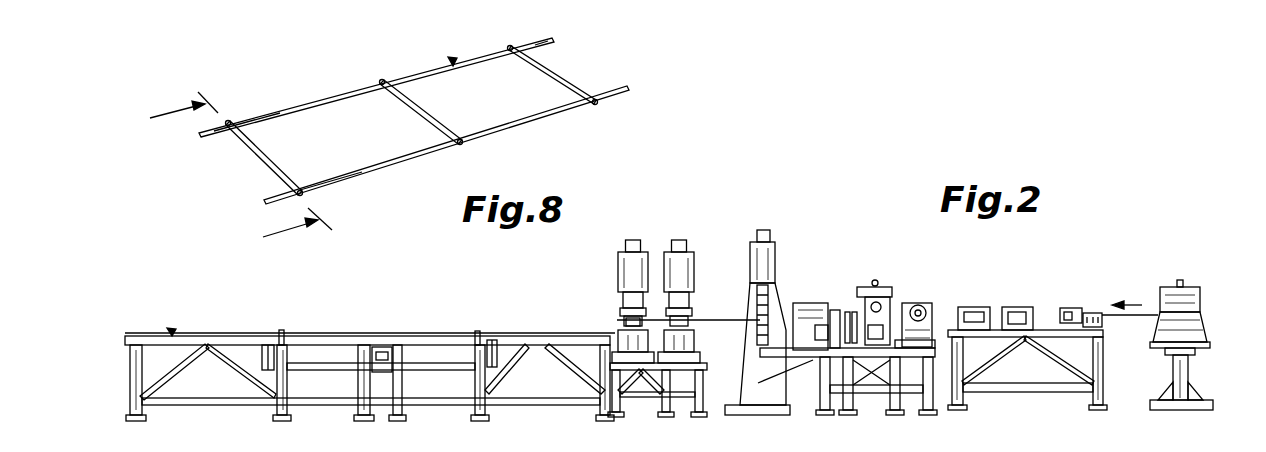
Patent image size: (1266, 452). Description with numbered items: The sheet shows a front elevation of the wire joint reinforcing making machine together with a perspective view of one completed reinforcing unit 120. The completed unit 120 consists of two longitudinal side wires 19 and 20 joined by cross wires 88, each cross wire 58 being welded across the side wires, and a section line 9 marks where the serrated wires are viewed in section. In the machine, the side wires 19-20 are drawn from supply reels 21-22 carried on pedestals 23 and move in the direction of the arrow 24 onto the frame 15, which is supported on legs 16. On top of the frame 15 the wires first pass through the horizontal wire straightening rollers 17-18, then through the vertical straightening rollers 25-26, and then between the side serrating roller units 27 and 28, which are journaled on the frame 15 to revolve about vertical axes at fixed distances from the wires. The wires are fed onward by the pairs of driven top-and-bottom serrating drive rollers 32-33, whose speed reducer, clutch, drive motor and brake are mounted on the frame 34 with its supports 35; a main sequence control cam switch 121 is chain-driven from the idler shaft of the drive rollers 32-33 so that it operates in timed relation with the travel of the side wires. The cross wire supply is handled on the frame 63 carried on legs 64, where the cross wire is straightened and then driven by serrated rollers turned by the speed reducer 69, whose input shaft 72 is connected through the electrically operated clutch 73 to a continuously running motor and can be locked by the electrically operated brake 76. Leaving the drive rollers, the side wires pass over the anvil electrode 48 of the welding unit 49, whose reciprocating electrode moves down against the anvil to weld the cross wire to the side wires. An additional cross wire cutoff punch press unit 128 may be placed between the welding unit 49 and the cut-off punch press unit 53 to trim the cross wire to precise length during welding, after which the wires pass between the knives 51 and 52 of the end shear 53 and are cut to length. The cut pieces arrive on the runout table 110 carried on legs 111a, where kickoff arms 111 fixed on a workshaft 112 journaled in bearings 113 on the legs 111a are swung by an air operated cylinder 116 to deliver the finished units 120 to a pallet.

In FIG. 8, the section line 9- 9 is at (227, 174).
In FIG. 8, the side wire 19 is at (321, 101).
In FIG. 8, the side wire 20 is at (410, 157).
In FIG. 8, the cross wire 88 is at (400, 90).
In FIG. 8, the cross wire 58 is at (558, 76).
In FIG. 8, the reinforcing unit 120 is at (453, 63).
In FIG. 2, the reinforcing unit 120 is at (170, 333).
In FIG. 2, the runout table 110 is at (320, 335).
In FIG. 2, the kickoff arms 111 is at (265, 360).
In FIG. 2, the legs 111a is at (290, 415).
In FIG. 2, the workshaft 112 is at (305, 370).
In FIG. 2, the bearings 113 is at (282, 330).
In FIG. 2, the air operated cylinder 116 is at (383, 345).
In FIG. 2, the knife 52 is at (620, 327).
In FIG. 2, the cut-off punch press unit 53 is at (625, 270).
In FIG. 2, the cross wire cutoff punch press unit 128 is at (688, 266).
In FIG. 2, the knife 51 is at (635, 344).
In FIG. 2, the side wires 19-20 is at (712, 320).
In FIG. 2, the welding unit 49 is at (770, 262).
In FIG. 2, the anvil electrode 48 is at (757, 320).
In FIG. 2, the frame 63 is at (812, 375).
In FIG. 2, the legs 64 is at (748, 405).
In FIG. 2, the leg brace 35 is at (843, 410).
In FIG. 2, the speed reducer 69 is at (805, 305).
In FIG. 2, the input shaft 72 is at (830, 330).
In FIG. 2, the electrically operated brake 76 is at (836, 316).
In FIG. 2, the electrically operated clutch 73 is at (850, 310).
In FIG. 2, the drive rollers 32-33 is at (886, 285).
In FIG. 2, the main sequence control cam switch 121 is at (905, 302).
In FIG. 2, the frame 34 is at (925, 346).
In FIG. 2, the frame 15 is at (1060, 352).
In FIG. 2, the legs 16 is at (965, 405).
In FIG. 2, the side serrating roller unit 28 is at (975, 305).
In FIG. 2, the side serrating roller unit 27 is at (1025, 306).
In FIG. 2, the vertical straightening rollers 25-26 is at (1085, 296).
In FIG. 2, the horizontal wire straightening rollers 17-18 is at (1097, 312).
In FIG. 2, the arrow 24 is at (1140, 305).
In FIG. 2, the supply reels 21-22 is at (1195, 298).
In FIG. 2, the pedestals 23 is at (1186, 372).